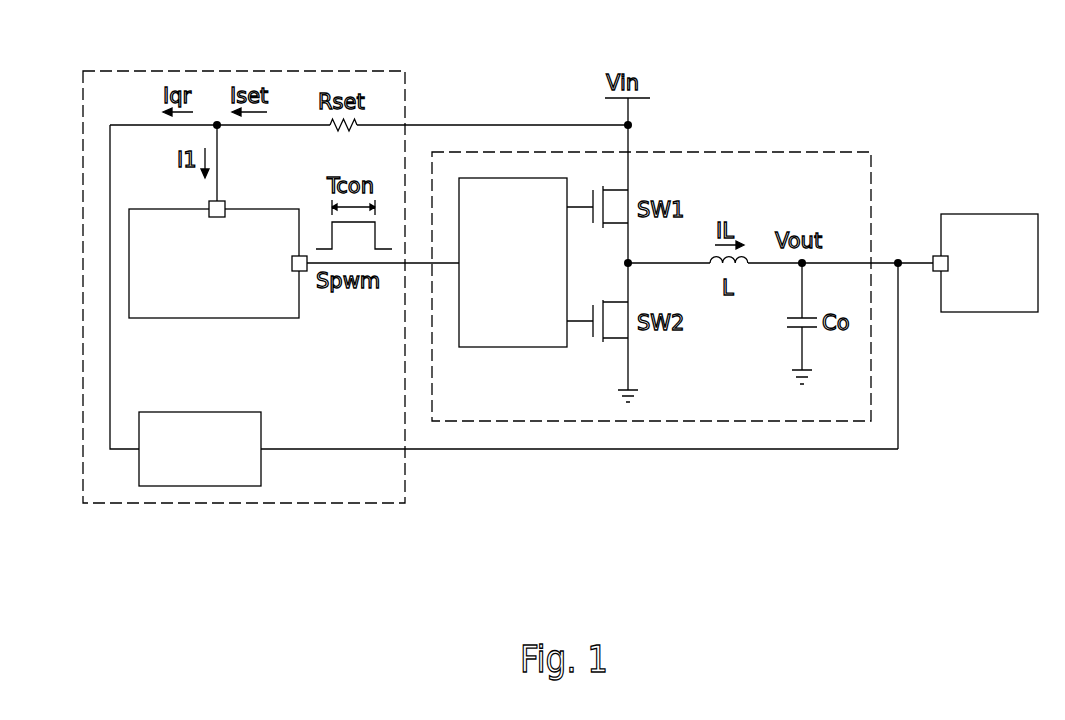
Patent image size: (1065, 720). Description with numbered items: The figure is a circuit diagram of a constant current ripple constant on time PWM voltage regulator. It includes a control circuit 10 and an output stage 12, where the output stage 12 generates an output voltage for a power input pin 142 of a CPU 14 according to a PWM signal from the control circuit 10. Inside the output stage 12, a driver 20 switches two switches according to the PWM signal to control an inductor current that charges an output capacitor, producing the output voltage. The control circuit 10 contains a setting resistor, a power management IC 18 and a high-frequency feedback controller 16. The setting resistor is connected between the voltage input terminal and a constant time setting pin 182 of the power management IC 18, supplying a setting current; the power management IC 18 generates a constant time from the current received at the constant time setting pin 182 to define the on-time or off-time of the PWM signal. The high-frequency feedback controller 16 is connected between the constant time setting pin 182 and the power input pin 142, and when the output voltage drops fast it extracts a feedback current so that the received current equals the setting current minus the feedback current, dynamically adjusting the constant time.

The control circuit 10 is at (240, 70).
The output stage 12 is at (756, 152).
The CPU 14 is at (985, 214).
The power input pin 142 is at (933, 255).
The high-frequency feedback controller 16 is at (162, 412).
The power management IC 18 is at (218, 320).
The constant time setting pin 182 is at (225, 201).
The driver 20 is at (515, 349).